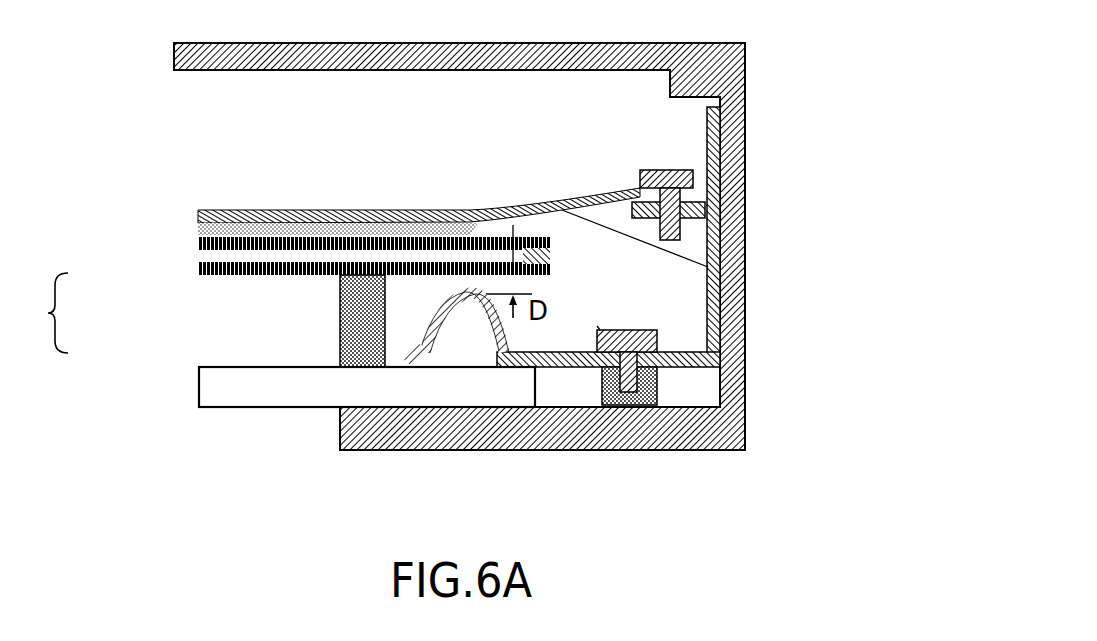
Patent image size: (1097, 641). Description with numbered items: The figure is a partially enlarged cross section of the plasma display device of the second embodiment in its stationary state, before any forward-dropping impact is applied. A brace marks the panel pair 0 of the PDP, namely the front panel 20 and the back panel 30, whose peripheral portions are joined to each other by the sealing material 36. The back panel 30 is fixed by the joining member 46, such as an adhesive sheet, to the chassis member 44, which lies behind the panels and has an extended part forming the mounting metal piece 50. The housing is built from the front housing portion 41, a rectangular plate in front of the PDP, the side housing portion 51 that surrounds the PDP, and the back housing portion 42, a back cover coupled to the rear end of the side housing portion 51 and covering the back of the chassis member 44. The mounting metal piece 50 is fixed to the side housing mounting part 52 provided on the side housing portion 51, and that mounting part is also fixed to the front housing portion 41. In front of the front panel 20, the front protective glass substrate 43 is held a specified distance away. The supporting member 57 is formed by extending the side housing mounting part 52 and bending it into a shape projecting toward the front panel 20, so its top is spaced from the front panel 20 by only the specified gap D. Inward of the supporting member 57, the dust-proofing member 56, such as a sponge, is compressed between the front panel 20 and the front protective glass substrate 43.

The display panel assembly 0 is at (48, 313).
The front panel 20 is at (217, 272).
The back panel 30 is at (198, 240).
The sealing material 36 is at (543, 275).
The front housing portion 41 is at (748, 432).
The back housing portion 42 is at (745, 45).
The front protective glass substrate 43 is at (275, 388).
The chassis member 44 is at (295, 213).
The joining member 46 is at (198, 227).
The mounting metal piece 50 is at (745, 275).
The side housing portion 51 is at (744, 175).
The side housing mounting part 52 is at (745, 218).
The dust-proofing member 56 is at (363, 325).
The supporting member 57 is at (485, 325).